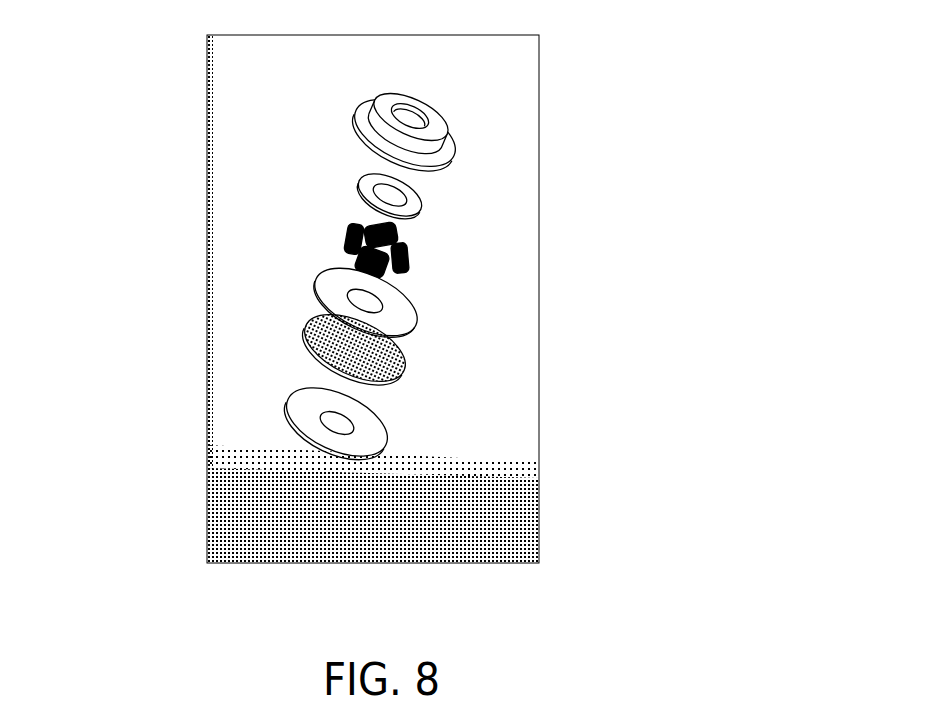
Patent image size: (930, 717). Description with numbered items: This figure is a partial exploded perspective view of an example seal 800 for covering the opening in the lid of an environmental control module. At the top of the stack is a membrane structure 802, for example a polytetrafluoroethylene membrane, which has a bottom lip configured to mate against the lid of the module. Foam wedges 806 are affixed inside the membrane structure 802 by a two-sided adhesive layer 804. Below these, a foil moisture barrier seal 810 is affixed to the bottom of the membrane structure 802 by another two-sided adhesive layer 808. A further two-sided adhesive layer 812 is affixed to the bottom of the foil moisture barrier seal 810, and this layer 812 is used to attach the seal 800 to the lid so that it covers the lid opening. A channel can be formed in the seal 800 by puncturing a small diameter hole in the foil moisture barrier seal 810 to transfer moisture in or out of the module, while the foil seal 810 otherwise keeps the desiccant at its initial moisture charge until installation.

The seal 800 is at (173, 56).
The membrane structure 802 is at (446, 156).
The two-sided adhesive layer 804 is at (421, 210).
The foam wedges 806 is at (412, 265).
The two-sided adhesive layer 808 is at (419, 322).
The foil moisture barrier seal 810 is at (406, 366).
The two-sided adhesive layer 812 is at (381, 446).